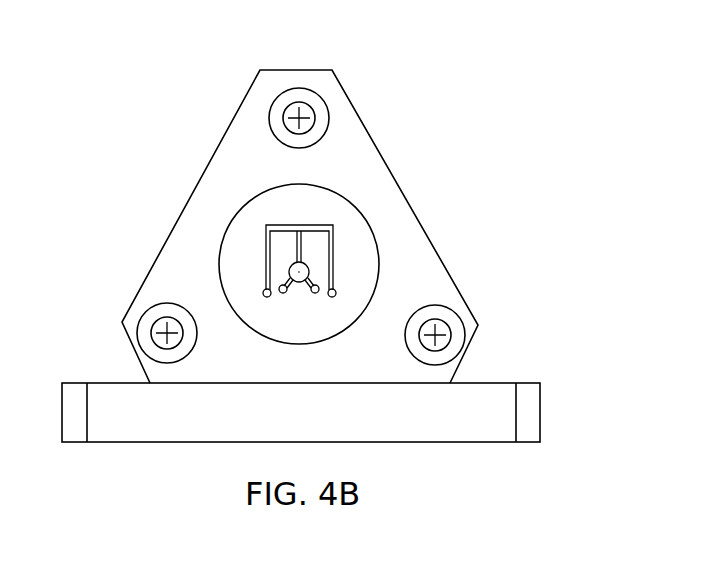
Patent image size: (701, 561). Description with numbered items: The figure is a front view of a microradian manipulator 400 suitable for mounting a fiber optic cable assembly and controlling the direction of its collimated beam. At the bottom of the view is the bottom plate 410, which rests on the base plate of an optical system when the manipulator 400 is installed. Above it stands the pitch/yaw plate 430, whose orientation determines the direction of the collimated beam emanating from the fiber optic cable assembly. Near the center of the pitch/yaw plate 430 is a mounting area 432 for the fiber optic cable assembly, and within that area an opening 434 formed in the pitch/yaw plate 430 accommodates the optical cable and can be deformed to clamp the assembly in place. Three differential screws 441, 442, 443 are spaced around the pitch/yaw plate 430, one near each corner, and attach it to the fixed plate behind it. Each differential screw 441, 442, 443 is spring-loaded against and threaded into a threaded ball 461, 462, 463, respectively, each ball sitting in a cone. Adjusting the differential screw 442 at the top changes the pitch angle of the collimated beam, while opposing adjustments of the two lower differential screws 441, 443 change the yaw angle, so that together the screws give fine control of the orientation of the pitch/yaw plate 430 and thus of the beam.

The microradian manipulator 400 is at (181, 152).
The bottom plate 410 is at (485, 383).
The pitch/yaw plate 430 is at (373, 173).
The mounting area 432 is at (357, 253).
The opening 434 is at (299, 279).
The differential screw 441 is at (180, 346).
The differential screw 442 is at (284, 127).
The differential screw 443 is at (427, 345).
The threaded ball 461 is at (137, 340).
The threaded ball 462 is at (301, 88).
The threaded ball 463 is at (450, 300).